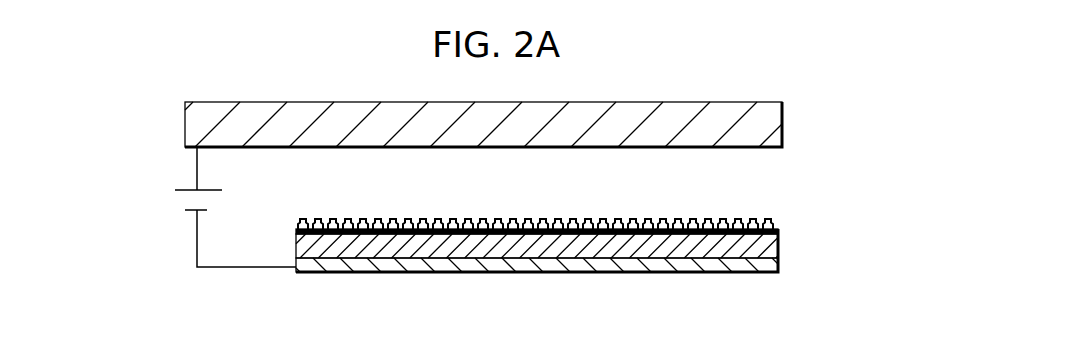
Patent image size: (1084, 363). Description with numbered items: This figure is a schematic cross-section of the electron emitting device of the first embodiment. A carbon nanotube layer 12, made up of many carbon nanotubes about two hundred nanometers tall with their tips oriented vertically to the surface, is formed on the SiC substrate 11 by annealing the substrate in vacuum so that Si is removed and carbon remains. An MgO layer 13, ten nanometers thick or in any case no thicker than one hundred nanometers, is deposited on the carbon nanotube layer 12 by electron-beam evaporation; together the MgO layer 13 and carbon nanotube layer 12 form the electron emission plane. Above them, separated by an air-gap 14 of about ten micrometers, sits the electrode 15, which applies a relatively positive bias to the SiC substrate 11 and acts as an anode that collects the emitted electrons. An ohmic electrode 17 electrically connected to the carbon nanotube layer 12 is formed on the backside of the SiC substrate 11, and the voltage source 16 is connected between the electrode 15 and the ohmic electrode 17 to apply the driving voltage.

The SiC substrate 11 is at (782, 243).
The carbon nanotube layer 12 is at (780, 229).
The MgO layer 13 is at (770, 221).
The air-gap 14 is at (765, 172).
The electrode 15 is at (765, 124).
The voltage source 16 is at (176, 199).
The ohmic electrode 17 is at (780, 265).